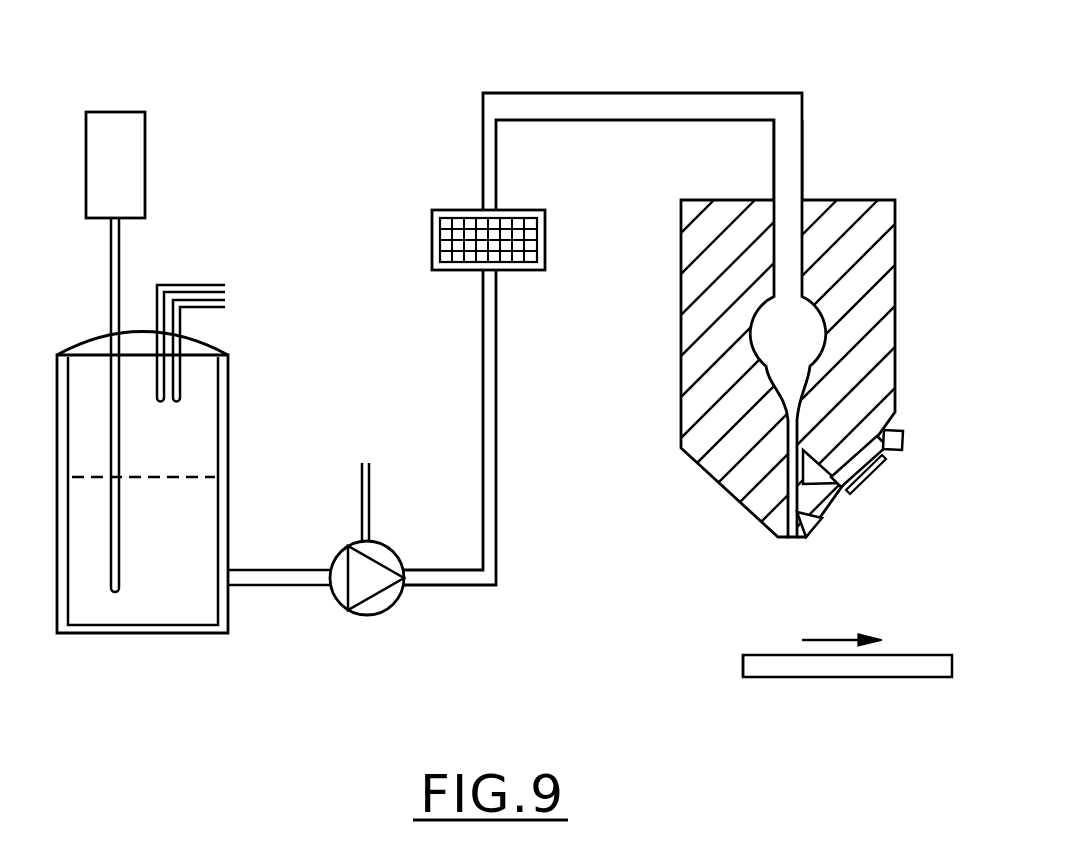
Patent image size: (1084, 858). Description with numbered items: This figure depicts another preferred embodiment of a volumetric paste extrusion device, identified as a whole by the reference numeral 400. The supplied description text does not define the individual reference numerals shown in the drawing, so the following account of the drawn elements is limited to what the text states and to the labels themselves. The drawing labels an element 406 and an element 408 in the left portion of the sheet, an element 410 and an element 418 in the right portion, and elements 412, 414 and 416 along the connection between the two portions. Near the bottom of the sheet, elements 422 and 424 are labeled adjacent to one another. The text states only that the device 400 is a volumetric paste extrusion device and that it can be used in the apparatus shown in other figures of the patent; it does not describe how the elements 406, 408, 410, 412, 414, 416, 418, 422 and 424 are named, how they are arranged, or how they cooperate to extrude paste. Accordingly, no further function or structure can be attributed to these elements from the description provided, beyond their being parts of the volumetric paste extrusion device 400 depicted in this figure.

The deposition system 400 is at (280, 90).
The liquid level 406 is at (212, 503).
The reservoir tank 408 is at (208, 412).
The dispensing block 410 is at (690, 407).
The conduit 412 is at (495, 402).
The pump 414 is at (402, 588).
The filter 416 is at (548, 230).
The valve assembly 418 is at (788, 538).
The substrate 422 is at (853, 680).
The substrate edge 424 is at (743, 672).